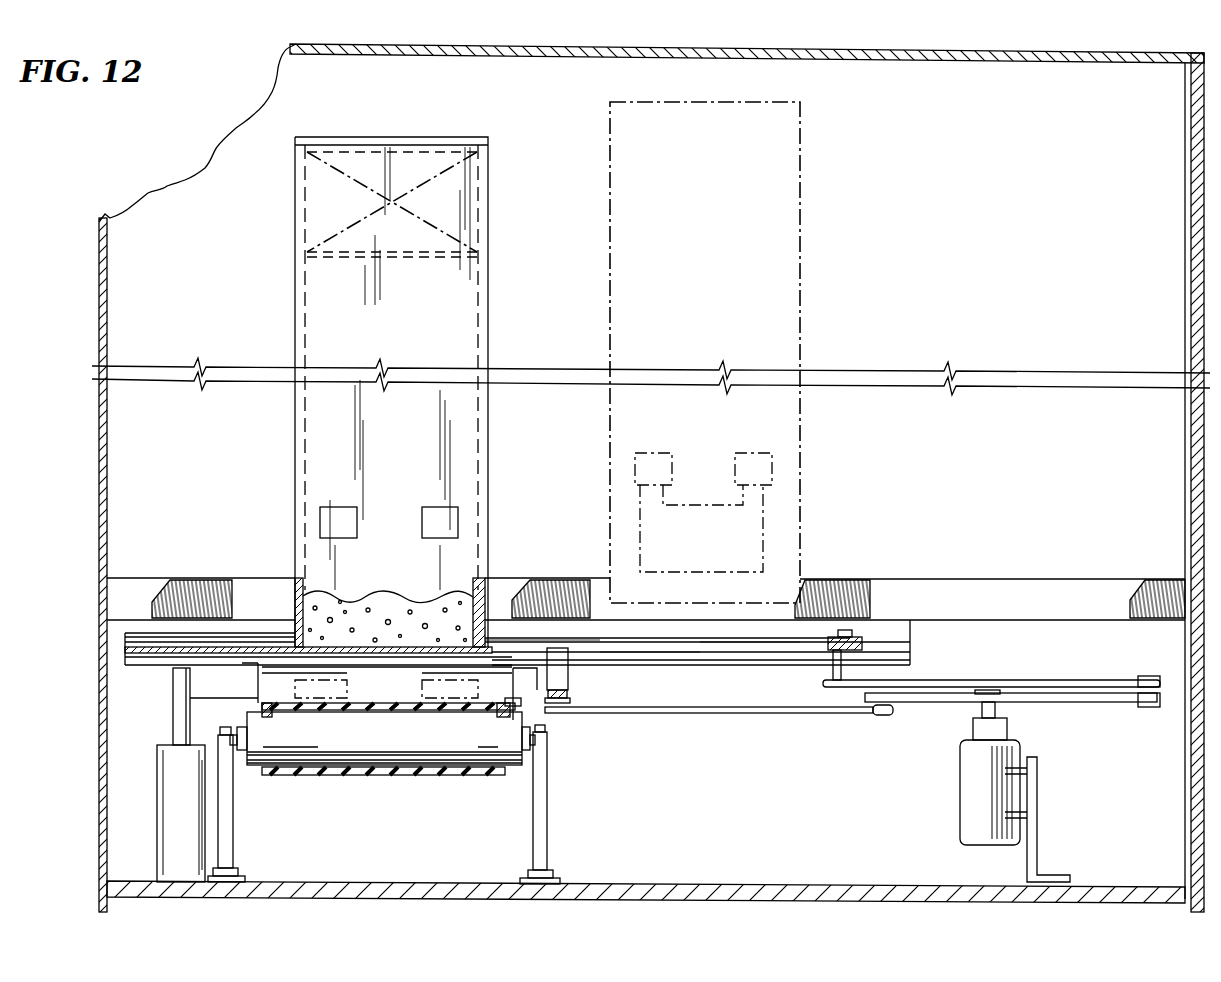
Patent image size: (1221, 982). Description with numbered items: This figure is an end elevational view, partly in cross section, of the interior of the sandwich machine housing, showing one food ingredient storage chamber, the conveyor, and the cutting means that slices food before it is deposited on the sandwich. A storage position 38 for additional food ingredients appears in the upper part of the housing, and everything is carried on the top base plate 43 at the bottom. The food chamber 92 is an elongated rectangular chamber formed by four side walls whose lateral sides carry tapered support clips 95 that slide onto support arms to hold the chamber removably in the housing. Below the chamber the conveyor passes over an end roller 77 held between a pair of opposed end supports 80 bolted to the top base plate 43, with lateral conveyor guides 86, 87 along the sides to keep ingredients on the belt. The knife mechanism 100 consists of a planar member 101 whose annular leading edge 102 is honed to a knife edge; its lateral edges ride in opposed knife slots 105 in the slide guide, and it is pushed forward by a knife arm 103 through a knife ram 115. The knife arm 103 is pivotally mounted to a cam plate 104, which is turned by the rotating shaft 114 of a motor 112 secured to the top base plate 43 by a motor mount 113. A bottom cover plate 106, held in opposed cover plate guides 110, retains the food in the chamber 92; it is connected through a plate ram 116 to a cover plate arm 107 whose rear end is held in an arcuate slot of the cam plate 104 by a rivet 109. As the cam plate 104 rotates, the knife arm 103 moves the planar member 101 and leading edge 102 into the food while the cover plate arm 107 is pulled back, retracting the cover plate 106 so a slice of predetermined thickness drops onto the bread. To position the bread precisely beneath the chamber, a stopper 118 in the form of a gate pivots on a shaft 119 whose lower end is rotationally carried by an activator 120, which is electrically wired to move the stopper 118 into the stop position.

The storage position 38 is at (966, 183).
The top base plate 43 is at (787, 886).
The food chamber 92 is at (470, 300).
The support clip 95 is at (357, 528).
The bottom cover plate 106 is at (326, 647).
The knife slot 105 is at (231, 612).
The cover plate guide 110 is at (192, 623).
The leading edge 102 is at (542, 640).
The planar member 101 is at (658, 640).
The knife mechanism 100 is at (764, 634).
The knife ram 115 is at (828, 660).
The knife arm 103 is at (1063, 680).
The cam plate 104 is at (1087, 702).
The cover plate arm 107 is at (748, 713).
The rivet 109 is at (880, 716).
The rotating shaft 114 is at (978, 713).
The motor 112 is at (975, 786).
The motor mount 113 is at (1038, 843).
The plate ram 116 is at (565, 677).
The stopper 118 is at (215, 680).
The shaft 119 is at (176, 717).
The activator 120 is at (175, 808).
The end support 80 is at (228, 824).
The end roller 77 is at (361, 744).
The lateral conveyor guide 86 is at (270, 717).
The lateral conveyor guide 87 is at (501, 717).